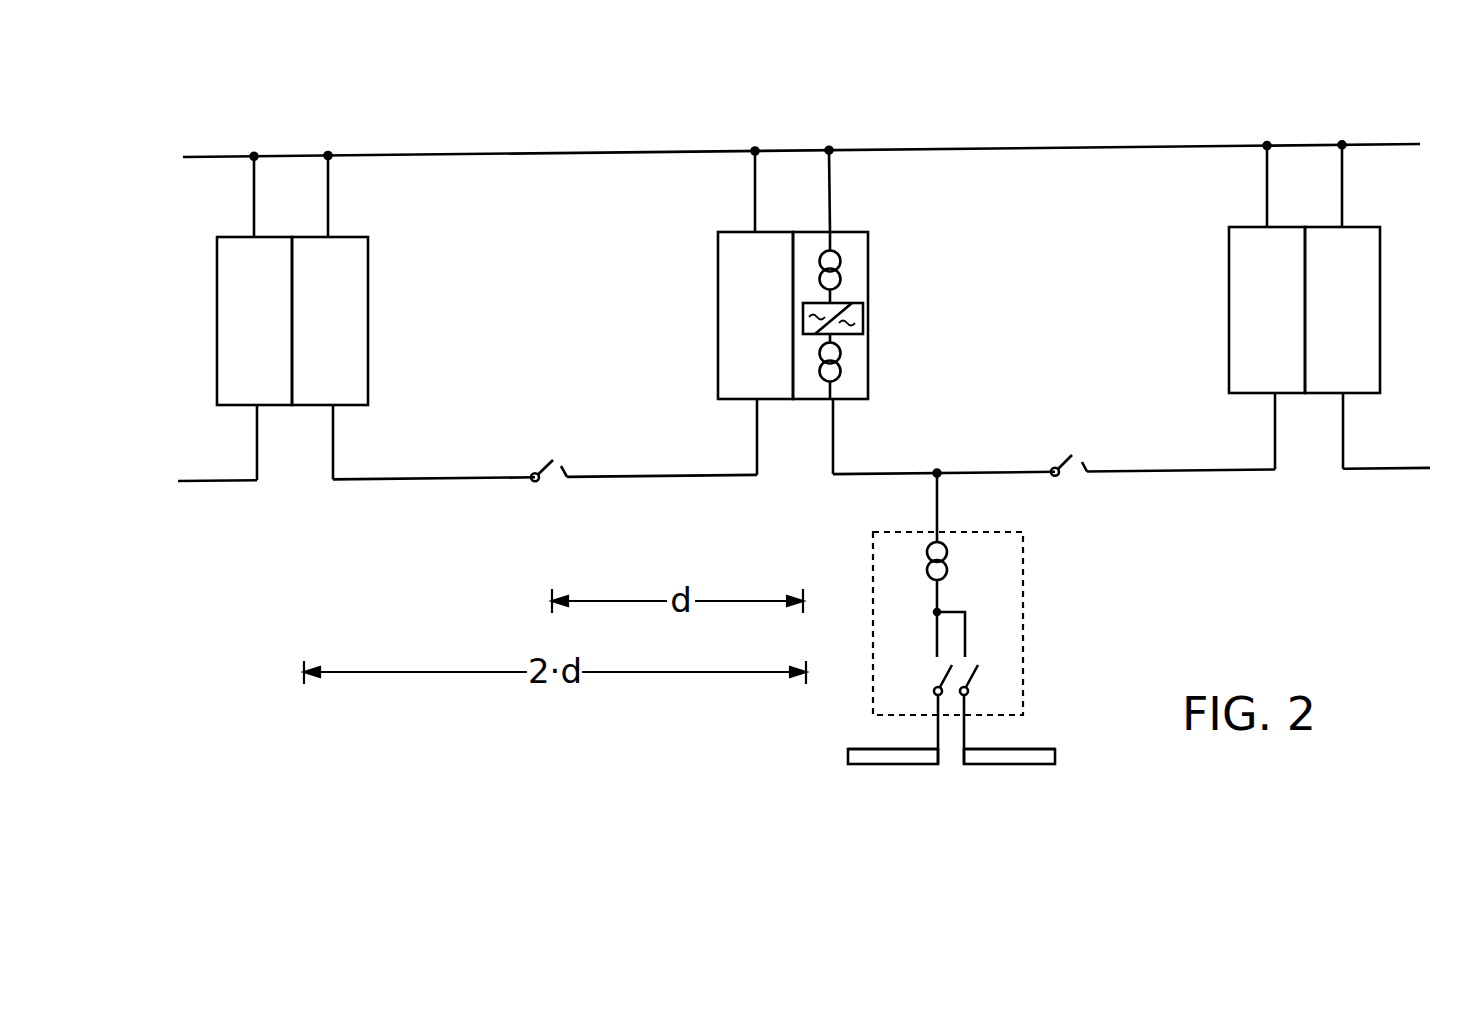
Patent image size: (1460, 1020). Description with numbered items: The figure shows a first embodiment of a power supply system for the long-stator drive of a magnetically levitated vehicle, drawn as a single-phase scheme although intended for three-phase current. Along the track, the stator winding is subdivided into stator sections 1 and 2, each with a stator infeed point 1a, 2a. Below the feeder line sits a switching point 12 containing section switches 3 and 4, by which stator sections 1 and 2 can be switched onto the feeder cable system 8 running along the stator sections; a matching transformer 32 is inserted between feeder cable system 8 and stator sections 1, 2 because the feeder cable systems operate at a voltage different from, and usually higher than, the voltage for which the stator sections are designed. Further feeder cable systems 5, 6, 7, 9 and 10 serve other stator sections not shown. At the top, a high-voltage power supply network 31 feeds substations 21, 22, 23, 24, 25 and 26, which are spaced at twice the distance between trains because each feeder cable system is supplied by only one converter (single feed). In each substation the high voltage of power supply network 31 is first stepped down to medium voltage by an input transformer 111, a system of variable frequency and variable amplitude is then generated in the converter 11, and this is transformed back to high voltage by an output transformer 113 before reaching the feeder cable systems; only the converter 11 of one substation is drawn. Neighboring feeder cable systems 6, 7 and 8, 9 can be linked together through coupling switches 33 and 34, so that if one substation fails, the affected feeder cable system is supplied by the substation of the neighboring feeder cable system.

The power supply network 31 is at (902, 150).
The substation 21 is at (245, 318).
The substation 22 is at (343, 313).
The substation 23 is at (748, 300).
The substation 24 is at (870, 375).
The converter 11 is at (864, 314).
The input transformer 111 is at (901, 203).
The output transformer 113 is at (892, 433).
The substation 25 is at (1258, 303).
The substation 26 is at (1355, 292).
The feeder cable system 5 is at (213, 481).
The feeder cable system 6 is at (440, 479).
The feeder cable system 7 is at (643, 476).
The feeder cable system 8 is at (987, 472).
The feeder cable system 9 is at (1165, 470).
The feeder cable system 10 is at (1400, 469).
The coupling switch 33 is at (541, 471).
The coupling switch 34 is at (1068, 456).
The switching point 12 is at (1023, 595).
The matching transformer 32 is at (947, 553).
The section switch 3 is at (940, 677).
The section switch 4 is at (975, 673).
The stator section 1 is at (898, 765).
The stator section 2 is at (1017, 765).
The stator infeed point 1a is at (937, 747).
The stator infeed point 2a is at (965, 747).